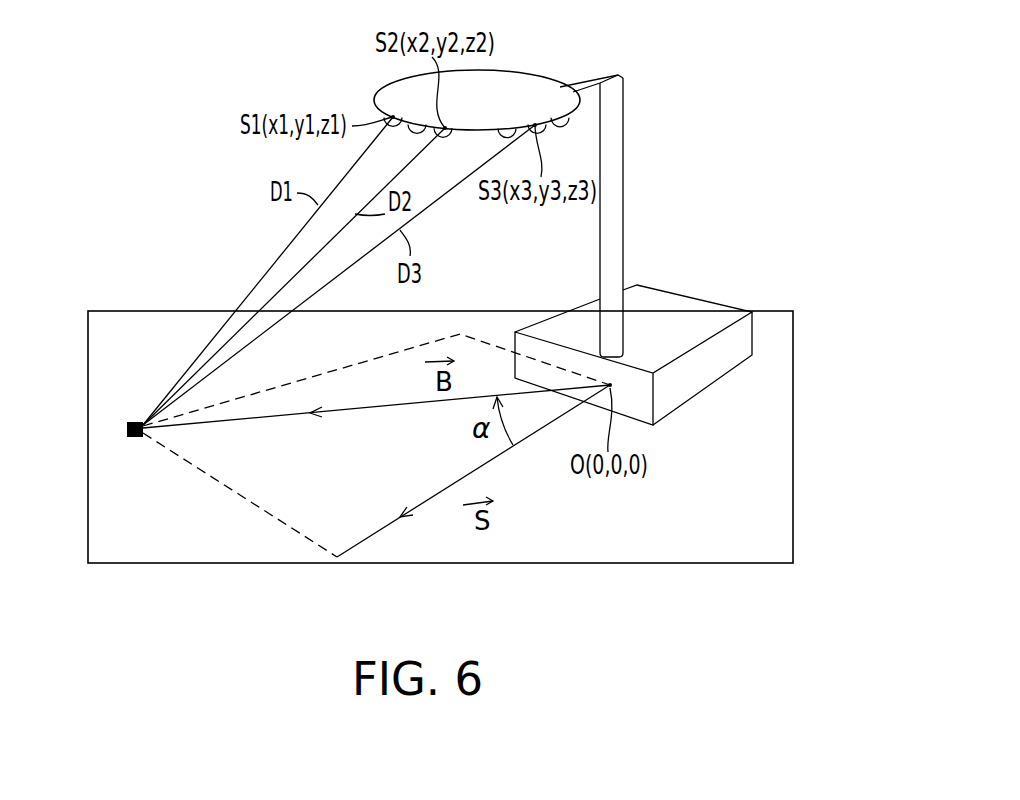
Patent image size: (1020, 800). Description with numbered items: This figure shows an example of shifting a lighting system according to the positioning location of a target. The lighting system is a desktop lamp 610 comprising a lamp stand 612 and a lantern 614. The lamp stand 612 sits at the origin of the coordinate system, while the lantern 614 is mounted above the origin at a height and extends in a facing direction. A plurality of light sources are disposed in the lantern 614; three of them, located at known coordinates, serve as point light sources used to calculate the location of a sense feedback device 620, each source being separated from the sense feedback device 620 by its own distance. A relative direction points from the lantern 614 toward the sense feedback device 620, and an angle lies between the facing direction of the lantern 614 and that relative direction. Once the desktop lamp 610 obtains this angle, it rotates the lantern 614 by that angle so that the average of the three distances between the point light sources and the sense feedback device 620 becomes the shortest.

The desktop lamp 610 is at (574, 224).
The lamp stand 612 is at (690, 308).
The lantern 614 is at (510, 93).
The sense feedback device 620 is at (127, 428).